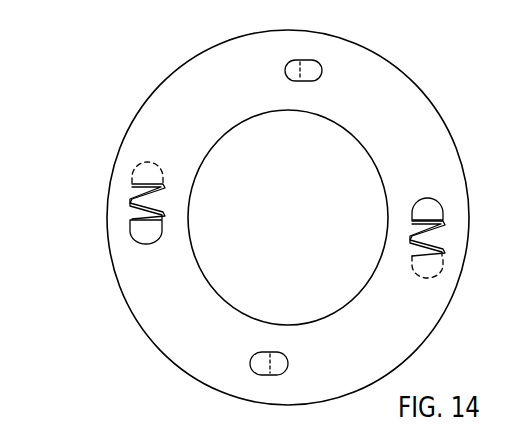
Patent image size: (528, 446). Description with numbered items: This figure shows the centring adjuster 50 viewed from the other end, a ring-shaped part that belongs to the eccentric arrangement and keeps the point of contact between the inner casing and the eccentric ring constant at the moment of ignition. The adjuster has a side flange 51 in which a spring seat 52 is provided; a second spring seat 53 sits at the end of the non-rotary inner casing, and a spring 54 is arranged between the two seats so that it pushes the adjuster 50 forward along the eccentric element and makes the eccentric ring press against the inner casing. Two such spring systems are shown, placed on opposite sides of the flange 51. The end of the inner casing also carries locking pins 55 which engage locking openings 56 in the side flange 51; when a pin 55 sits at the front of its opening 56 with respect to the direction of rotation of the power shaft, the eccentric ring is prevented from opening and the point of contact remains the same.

The centring adjuster 50 is at (259, 217).
The side flange 51 is at (143, 315).
The spring seat 52 is at (138, 228).
The spring seat 53 is at (148, 160).
The spring 54 is at (165, 203).
The locking pin 55 is at (293, 60).
The locking opening 56 is at (314, 70).